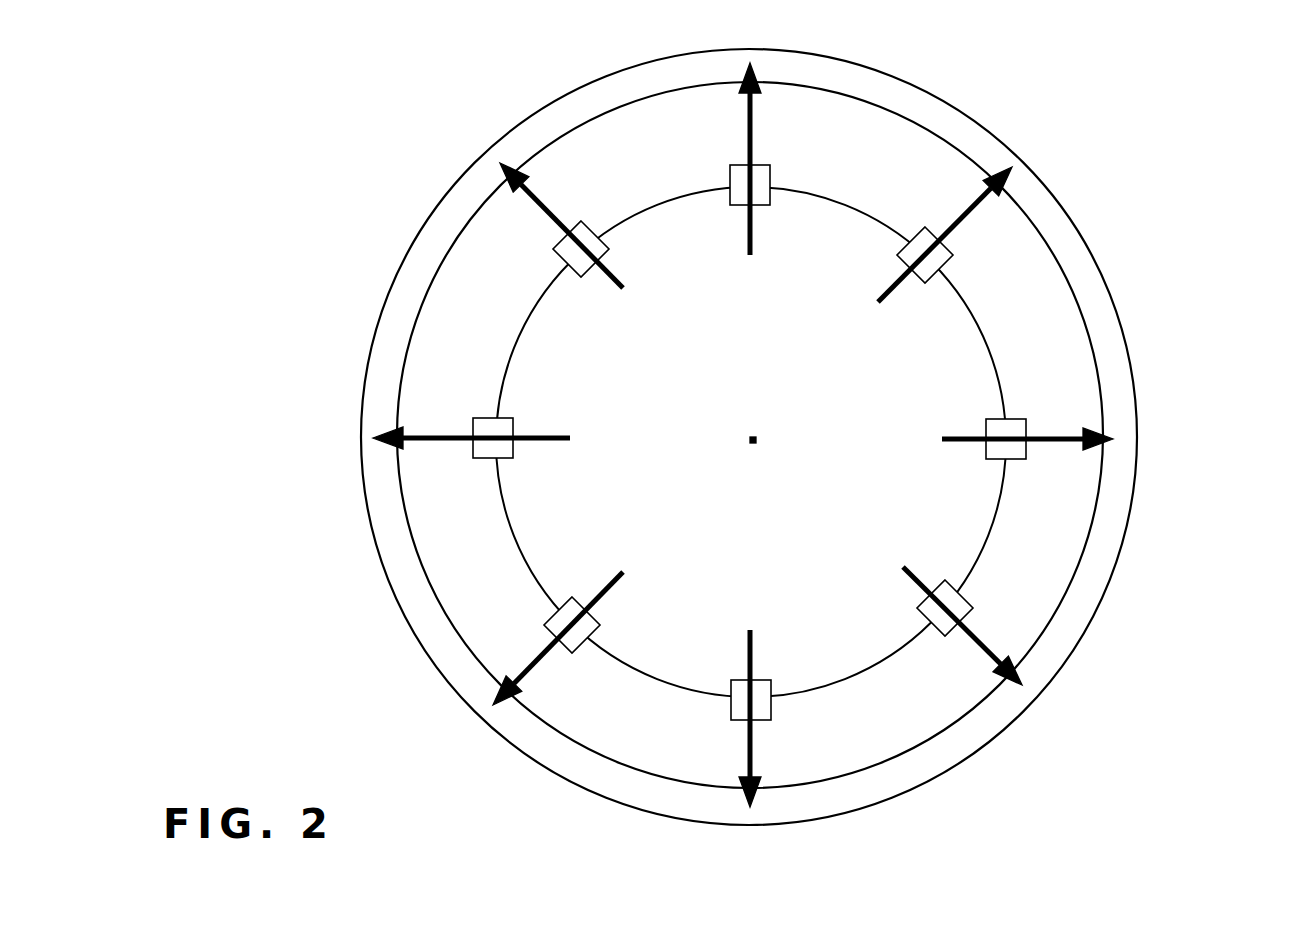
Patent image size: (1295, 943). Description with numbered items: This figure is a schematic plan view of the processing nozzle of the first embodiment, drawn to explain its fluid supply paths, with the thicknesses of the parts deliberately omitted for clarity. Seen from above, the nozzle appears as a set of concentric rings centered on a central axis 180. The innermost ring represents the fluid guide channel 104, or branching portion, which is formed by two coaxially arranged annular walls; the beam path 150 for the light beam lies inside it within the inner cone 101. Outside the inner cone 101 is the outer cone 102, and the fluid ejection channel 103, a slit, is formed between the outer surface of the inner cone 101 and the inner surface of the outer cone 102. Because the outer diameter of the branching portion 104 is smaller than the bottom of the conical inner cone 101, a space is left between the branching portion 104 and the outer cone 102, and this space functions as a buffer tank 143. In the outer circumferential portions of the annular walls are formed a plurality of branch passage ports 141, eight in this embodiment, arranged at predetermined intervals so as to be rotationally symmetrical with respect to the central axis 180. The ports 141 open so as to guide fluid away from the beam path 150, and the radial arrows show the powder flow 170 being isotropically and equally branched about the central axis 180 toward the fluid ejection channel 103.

The inner cone 101 is at (1077, 297).
The outer cone 102 is at (1123, 331).
The fluid ejection channel 103 is at (388, 345).
The fluid guide channel 104 is at (873, 213).
The branch passage ports 141 is at (767, 167).
The buffer tank 143 is at (1065, 521).
The beam path 150 is at (813, 615).
The powder flow 170 is at (730, 177).
The central axis 180 is at (753, 438).